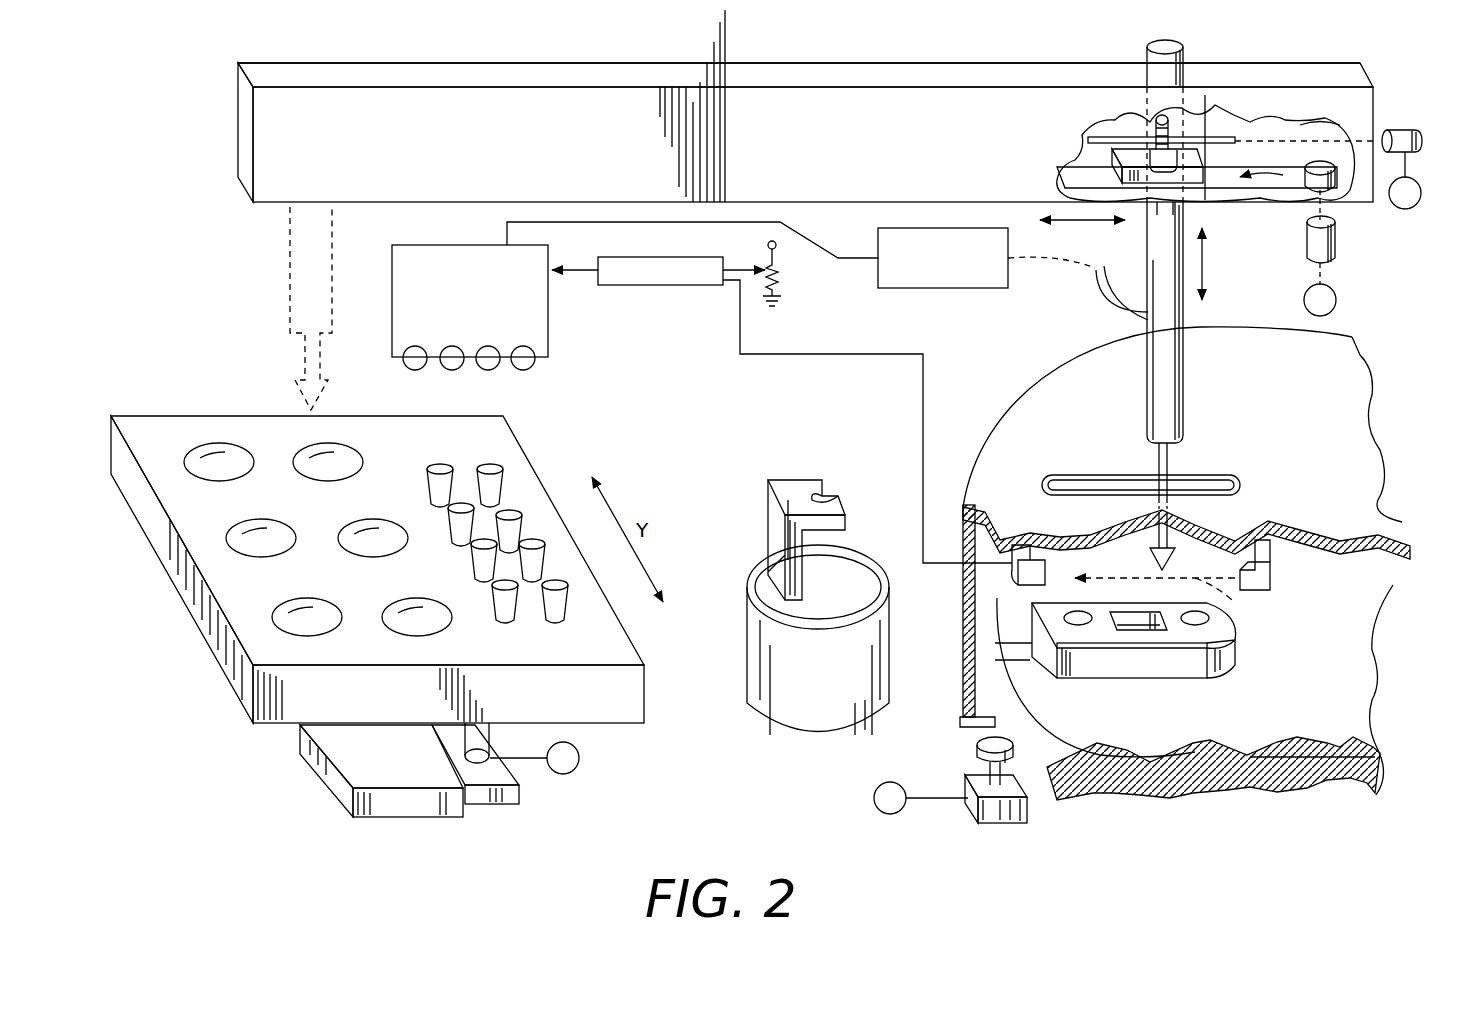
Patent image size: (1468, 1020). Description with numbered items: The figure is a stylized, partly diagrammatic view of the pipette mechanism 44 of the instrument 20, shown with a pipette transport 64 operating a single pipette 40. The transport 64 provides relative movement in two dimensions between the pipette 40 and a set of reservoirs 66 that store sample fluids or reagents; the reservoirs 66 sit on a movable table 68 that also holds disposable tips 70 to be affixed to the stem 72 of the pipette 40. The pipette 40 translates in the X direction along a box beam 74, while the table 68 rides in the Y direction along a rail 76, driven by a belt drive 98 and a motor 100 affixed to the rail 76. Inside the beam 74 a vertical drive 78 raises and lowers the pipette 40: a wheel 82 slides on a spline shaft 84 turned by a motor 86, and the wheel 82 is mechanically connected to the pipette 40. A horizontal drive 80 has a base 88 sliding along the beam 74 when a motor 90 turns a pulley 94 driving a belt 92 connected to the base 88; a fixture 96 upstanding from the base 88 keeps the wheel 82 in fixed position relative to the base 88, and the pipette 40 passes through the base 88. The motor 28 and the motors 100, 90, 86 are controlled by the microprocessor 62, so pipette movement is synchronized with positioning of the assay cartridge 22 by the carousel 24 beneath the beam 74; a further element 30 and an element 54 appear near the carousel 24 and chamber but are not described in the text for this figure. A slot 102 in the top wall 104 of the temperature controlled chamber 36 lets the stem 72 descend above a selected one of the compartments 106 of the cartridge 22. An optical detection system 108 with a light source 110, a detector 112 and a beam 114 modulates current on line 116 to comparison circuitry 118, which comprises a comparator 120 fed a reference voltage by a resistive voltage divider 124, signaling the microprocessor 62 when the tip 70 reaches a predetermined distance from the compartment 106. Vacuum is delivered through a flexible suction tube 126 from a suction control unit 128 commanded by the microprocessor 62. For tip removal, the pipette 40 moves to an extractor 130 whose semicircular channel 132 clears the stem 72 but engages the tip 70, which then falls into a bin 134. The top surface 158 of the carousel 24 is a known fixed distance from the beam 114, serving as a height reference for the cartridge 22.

The instrument 20 is at (200, 332).
The assay cartridge 22 is at (1097, 668).
The carousel 24 is at (1175, 770).
The motor 28 is at (1005, 815).
The sensor 30 is at (978, 752).
The temperature controlled chamber 36 is at (1060, 392).
The pipette 40 is at (290, 232).
The pipette mechanism 44 is at (1358, 272).
The chamber wall 54 is at (1017, 672).
The microprocessor 62 is at (436, 245).
The pipette transport 64 is at (822, 78).
The reservoirs 66 is at (350, 456).
The movable table 68 is at (644, 700).
The disposable tips 70 is at (490, 465).
The stem 72 is at (1172, 463).
The box beam 74 is at (541, 75).
The rail 76 is at (325, 765).
The vertical drive 78 is at (1240, 128).
The horizontal drive 80 is at (1285, 182).
The wheel 82 is at (1155, 125).
The spline shaft 84 is at (1205, 200).
The motor 86 is at (1400, 128).
The base 88 is at (1120, 157).
The motor 90 is at (1336, 240).
The belt 92 is at (1300, 128).
The pulley 94 is at (1340, 195).
The fixture 96 is at (1205, 200).
The belt drive 98 is at (490, 752).
The motor 100 is at (519, 795).
The slot 102 is at (1100, 478).
The top wall 104 is at (1342, 552).
The compartments 106 is at (1137, 630).
The optical detection system 108 is at (1278, 597).
The light source 110 is at (1276, 570).
The detector 112 is at (1048, 570).
The light beam 114 is at (1173, 596).
The line 116 is at (845, 354).
The electrical comparison circuitry 118 is at (612, 370).
The comparator 120 is at (650, 257).
The resistive voltage divider 124 is at (777, 290).
The suction tube 126 is at (1110, 300).
The suction control unit 128 is at (950, 288).
The extractor 130 is at (792, 480).
The semicircular channel 132 is at (830, 497).
The bin 134 is at (805, 695).
The top surface of the carousel 158 is at (1265, 735).